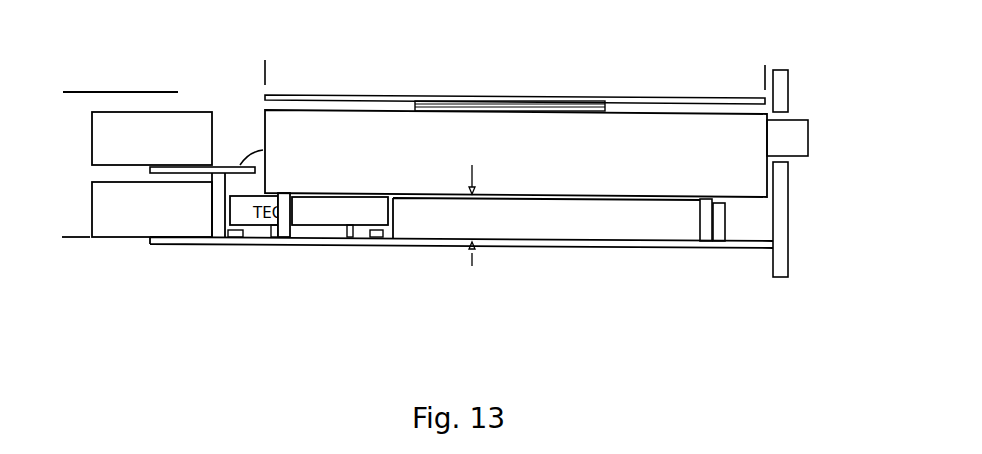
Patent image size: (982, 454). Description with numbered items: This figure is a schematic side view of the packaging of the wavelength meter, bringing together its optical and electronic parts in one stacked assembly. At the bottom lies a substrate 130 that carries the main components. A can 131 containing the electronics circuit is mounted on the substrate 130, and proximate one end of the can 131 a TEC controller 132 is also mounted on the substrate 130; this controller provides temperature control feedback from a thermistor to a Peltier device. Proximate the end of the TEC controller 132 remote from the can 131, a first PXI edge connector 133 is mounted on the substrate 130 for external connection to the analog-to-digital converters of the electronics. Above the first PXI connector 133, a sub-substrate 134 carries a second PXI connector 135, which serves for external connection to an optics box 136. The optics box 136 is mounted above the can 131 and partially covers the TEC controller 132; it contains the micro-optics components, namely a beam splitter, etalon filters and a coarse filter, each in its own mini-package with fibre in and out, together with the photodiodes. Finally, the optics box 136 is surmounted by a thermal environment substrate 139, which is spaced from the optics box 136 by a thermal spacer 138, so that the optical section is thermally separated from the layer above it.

The substrate 130 is at (668, 250).
The can 131 is at (607, 232).
The TEC controller 132 is at (363, 220).
The first PXI edge connector 133 is at (132, 225).
The sub-substrate 134 is at (240, 167).
The second PXI connector 135 is at (140, 125).
The optics box 136 is at (536, 168).
The thermal spacer 138 is at (433, 112).
The thermal environment substrate 139 is at (645, 98).